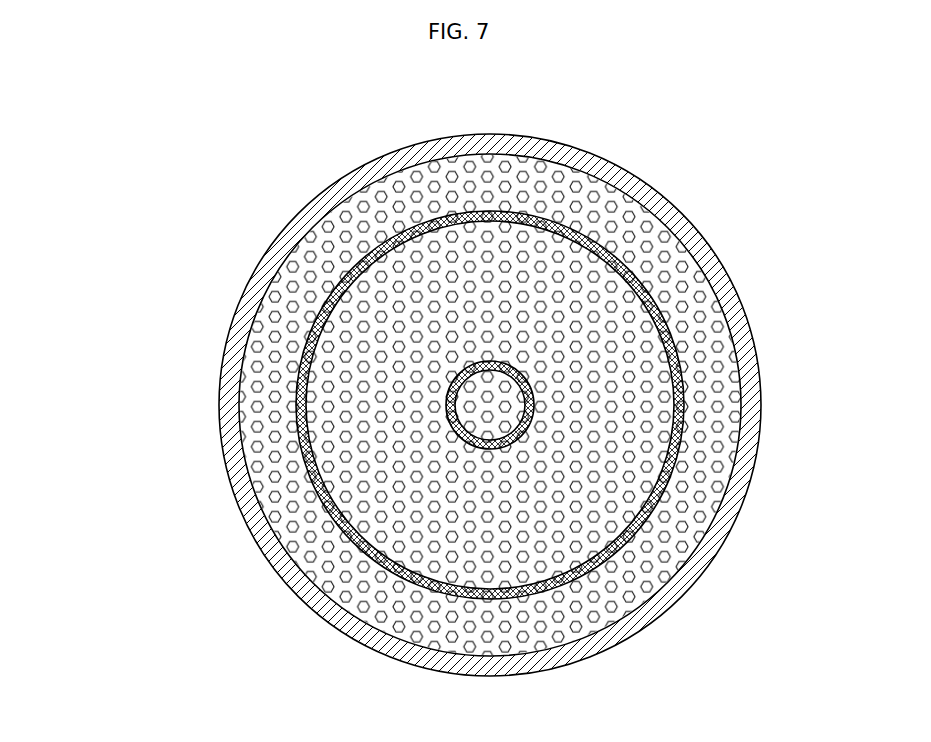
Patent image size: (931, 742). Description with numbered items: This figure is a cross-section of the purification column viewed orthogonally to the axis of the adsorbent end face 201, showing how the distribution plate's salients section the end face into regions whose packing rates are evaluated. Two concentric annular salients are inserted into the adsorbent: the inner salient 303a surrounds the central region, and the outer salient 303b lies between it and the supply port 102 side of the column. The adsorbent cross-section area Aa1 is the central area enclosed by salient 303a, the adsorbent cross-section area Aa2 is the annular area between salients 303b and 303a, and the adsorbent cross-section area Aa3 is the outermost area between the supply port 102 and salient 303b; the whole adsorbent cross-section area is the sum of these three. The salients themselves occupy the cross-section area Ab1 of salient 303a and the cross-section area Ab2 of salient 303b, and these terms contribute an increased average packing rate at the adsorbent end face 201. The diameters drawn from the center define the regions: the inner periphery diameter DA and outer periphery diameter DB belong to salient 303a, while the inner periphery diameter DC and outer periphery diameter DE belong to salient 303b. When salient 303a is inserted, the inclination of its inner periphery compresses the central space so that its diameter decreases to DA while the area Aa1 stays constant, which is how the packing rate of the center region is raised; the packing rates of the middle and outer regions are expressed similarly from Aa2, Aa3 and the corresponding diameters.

The supply port 102 is at (258, 275).
The adsorbent end face 201 is at (372, 447).
The salient 303a is at (477, 357).
The salient 303b is at (297, 415).
The adsorbent cross-section area Aa1 is at (500, 415).
The adsorbent cross-section area Aa2 is at (603, 490).
The adsorbent cross-section area Aa3 is at (618, 580).
The cross-section area of salient Ab1 is at (452, 375).
The cross-section area of salient Ab2 is at (300, 456).
The inner periphery diameter DA is at (455, 404).
The outer periphery diameter DB is at (803, 275).
The inner periphery diameter DC is at (757, 160).
The outer periphery diameter DE is at (695, 112).